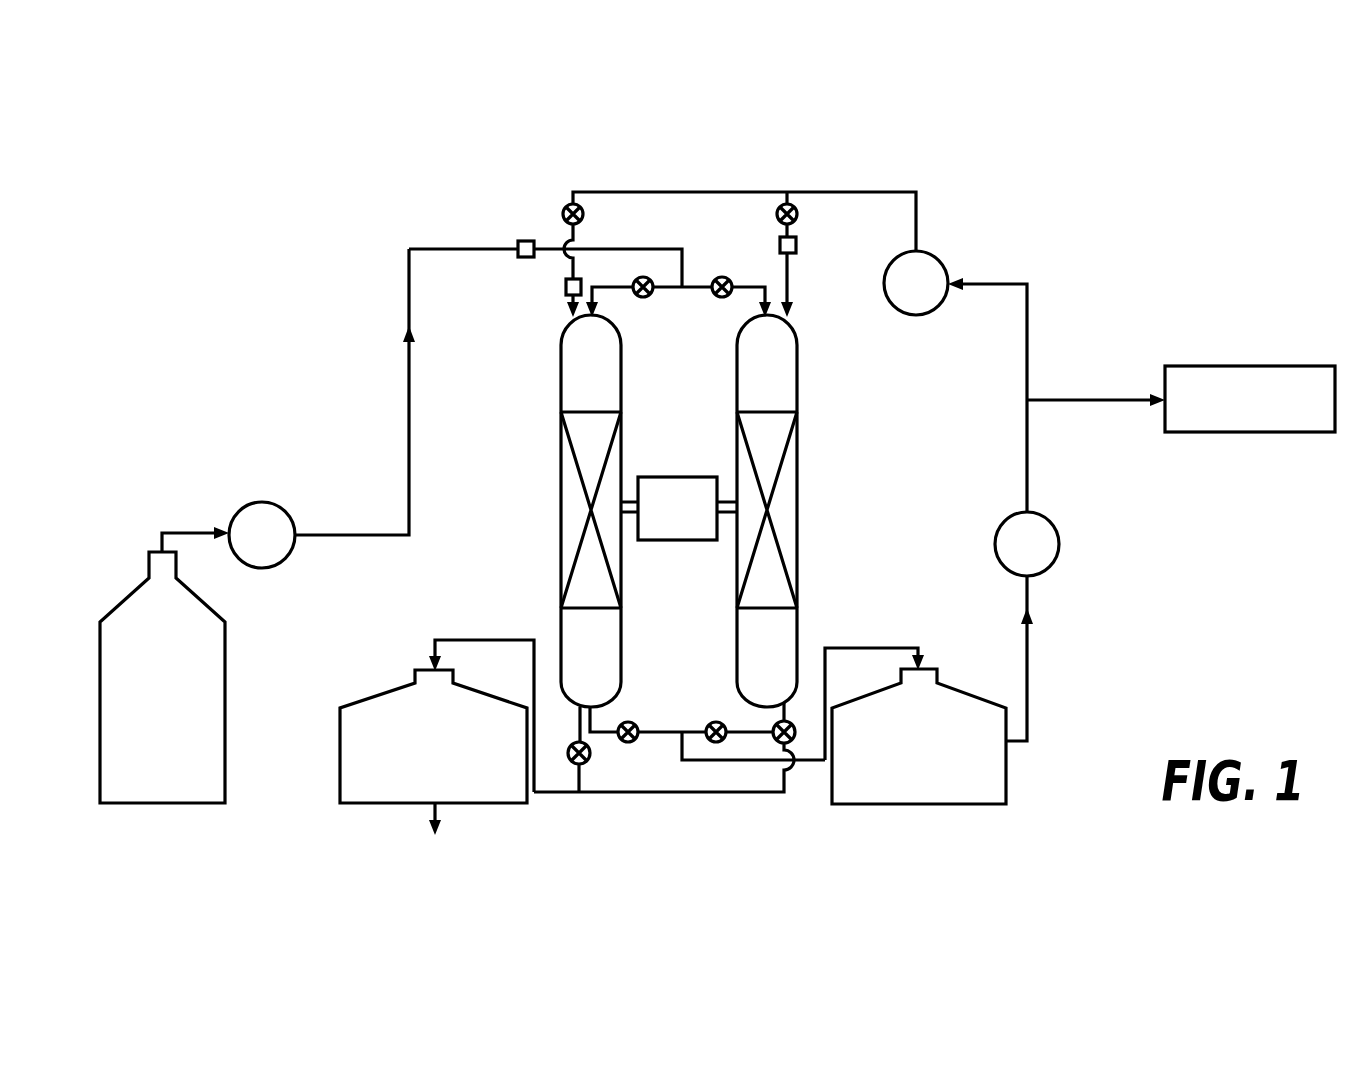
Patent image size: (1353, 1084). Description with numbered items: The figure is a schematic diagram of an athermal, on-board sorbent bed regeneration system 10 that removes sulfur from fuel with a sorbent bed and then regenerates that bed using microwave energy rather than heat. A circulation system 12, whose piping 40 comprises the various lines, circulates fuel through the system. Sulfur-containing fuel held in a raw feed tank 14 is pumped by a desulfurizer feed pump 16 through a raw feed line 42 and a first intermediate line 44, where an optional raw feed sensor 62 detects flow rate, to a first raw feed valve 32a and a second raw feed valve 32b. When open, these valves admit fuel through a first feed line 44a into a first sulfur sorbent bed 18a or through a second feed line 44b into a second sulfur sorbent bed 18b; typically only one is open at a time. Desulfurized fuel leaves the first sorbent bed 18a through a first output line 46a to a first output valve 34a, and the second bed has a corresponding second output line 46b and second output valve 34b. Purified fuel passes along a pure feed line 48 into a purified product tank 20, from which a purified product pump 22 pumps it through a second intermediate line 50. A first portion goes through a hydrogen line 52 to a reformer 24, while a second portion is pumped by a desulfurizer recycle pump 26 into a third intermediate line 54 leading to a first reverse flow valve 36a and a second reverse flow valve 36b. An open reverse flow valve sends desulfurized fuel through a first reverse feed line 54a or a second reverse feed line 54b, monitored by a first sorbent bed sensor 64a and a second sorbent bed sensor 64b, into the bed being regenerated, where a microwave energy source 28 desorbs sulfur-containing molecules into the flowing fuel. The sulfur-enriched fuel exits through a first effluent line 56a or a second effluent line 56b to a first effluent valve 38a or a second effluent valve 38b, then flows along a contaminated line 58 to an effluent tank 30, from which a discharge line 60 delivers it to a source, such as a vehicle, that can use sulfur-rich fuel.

The sorbent bed regeneration system 10 is at (1156, 218).
The circulation system 12 is at (396, 254).
The raw feed tank 14 is at (225, 693).
The desulfurizer feed pump 16 is at (285, 510).
The first sulfur sorbent bed 18a is at (561, 367).
The second sulfur sorbent bed 18b is at (797, 368).
The purified product tank 20 is at (1006, 802).
The purified product pump 22 is at (1060, 547).
The reformer 24 is at (1213, 366).
The desulfurizer recycle pump 26 is at (937, 257).
The microwave energy source 28 is at (668, 477).
The effluent tank 30 is at (339, 745).
The first raw feed valve 32a is at (645, 298).
The second raw feed valve 32b is at (718, 301).
The first output valve 34a is at (636, 724).
The second output valve 34b is at (714, 721).
The first reverse flow valve 36a is at (563, 212).
The second reverse flow valve 36b is at (797, 214).
The first effluent valve 38a is at (586, 765).
The second effluent valve 38b is at (793, 724).
The piping 40 is at (410, 500).
The raw feed line 42 is at (178, 530).
The first intermediate line 44 is at (504, 257).
The first feed line 44a is at (620, 289).
The second feed line 44b is at (766, 290).
The first output line 46a is at (651, 735).
The second output line 46b is at (758, 735).
The pure feed line 48 is at (890, 648).
The second intermediate line 50 is at (1030, 681).
The hydrogen line 52 is at (1087, 398).
The third intermediate line 54 is at (795, 190).
The first reverse feed line 54a is at (563, 272).
The second reverse feed line 54b is at (792, 268).
The first effluent line 56a is at (575, 722).
The second effluent line 56b is at (785, 792).
The contaminated line 58 is at (450, 640).
The discharge line 60 is at (430, 815).
The raw feed sensor 62 is at (525, 241).
The first sorbent bed sensor 64a is at (566, 292).
The second sorbent bed sensor 64b is at (780, 243).